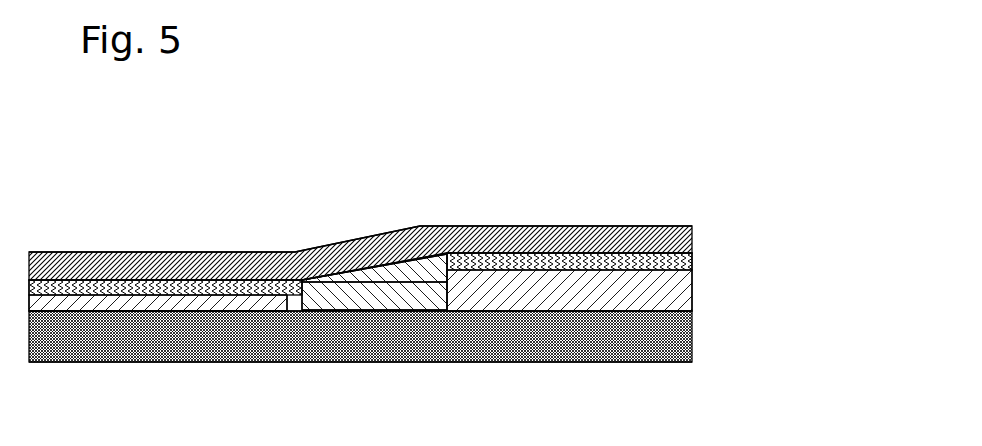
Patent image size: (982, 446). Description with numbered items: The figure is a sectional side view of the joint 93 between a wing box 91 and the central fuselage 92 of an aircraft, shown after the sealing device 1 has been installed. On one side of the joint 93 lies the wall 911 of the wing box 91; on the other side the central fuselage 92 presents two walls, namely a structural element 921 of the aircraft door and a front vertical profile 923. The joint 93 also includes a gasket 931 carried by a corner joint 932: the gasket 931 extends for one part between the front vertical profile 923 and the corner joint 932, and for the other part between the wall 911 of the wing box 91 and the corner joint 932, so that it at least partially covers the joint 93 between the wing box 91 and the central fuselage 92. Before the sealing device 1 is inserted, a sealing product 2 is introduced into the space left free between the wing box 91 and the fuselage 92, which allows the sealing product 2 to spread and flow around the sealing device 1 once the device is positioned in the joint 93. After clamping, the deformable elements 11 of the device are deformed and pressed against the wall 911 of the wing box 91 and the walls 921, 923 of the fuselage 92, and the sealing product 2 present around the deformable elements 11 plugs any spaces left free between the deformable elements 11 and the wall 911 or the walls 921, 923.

The sealing device 1 is at (376, 256).
The sealing product 2 is at (421, 272).
The deformable elements 11 is at (388, 305).
The wing box 91 is at (703, 288).
The wall of the wing box 911 is at (648, 272).
The central fuselage 92 is at (703, 349).
The structural element of the door 921 is at (632, 345).
The front vertical profile 923 is at (72, 303).
The joint 93 is at (140, 226).
The gasket 931 is at (262, 280).
The corner joint 932 is at (183, 252).